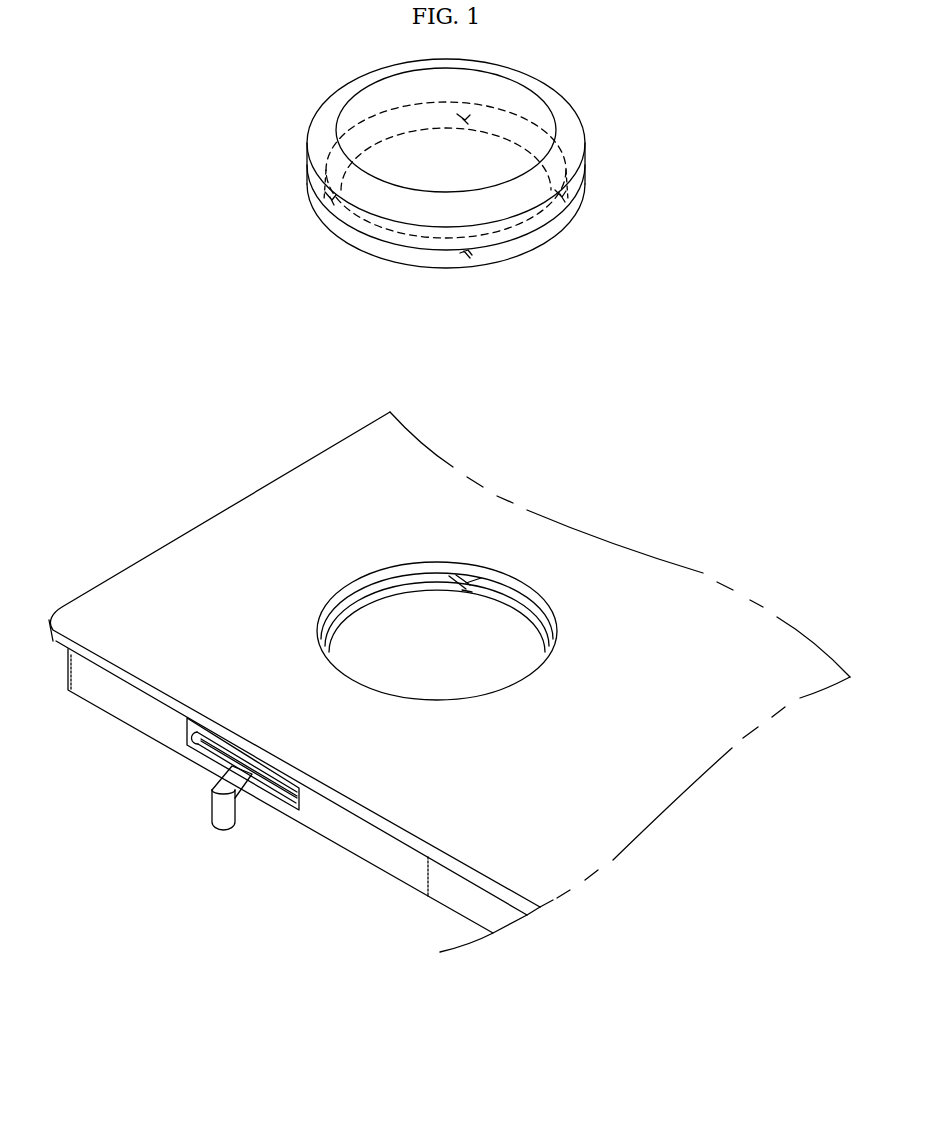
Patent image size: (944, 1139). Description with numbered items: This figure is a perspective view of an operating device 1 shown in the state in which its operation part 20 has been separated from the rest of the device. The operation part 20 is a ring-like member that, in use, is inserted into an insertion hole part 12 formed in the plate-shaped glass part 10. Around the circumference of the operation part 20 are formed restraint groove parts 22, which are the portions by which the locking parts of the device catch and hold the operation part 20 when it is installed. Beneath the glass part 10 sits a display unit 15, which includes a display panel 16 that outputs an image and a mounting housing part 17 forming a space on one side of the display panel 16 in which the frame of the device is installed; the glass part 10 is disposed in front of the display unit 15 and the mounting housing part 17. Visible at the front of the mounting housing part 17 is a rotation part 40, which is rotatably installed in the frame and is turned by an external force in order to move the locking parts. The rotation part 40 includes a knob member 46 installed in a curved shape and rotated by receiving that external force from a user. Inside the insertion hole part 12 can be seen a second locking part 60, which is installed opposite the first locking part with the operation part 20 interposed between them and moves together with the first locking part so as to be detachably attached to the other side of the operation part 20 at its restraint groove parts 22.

The operating device 1 is at (174, 290).
The glass part 10 is at (247, 546).
The insertion hole part 12 is at (375, 611).
The display unit 15 is at (360, 967).
The display panel 16 is at (470, 907).
The mounting housing part 17 is at (333, 838).
The operation part 20 is at (606, 116).
The restraint groove parts 22 is at (466, 252).
The rotation part 40 is at (181, 847).
The knob member 46 is at (210, 810).
The second locking part 60 is at (468, 593).